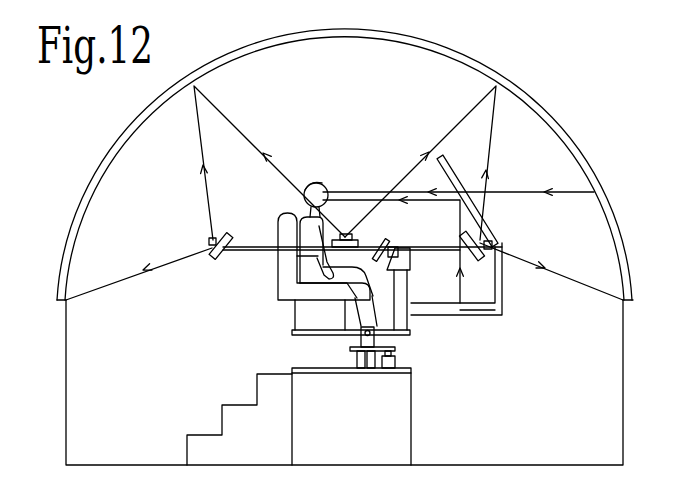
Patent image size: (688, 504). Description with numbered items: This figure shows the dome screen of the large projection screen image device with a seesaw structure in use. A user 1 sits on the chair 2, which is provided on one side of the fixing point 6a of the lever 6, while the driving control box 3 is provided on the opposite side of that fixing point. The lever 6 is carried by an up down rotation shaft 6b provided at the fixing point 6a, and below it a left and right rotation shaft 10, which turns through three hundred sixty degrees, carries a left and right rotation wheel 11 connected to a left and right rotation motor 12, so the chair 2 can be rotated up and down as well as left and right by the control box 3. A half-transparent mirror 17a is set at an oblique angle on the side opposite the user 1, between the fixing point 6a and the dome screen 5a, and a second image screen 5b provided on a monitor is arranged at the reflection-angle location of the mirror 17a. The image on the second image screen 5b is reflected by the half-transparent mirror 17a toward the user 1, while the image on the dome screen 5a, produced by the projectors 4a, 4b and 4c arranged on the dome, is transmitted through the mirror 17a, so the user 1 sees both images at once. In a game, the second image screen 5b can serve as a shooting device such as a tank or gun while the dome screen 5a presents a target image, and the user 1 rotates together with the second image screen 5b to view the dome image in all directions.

The user 1 is at (311, 186).
The chair 2 is at (280, 284).
The driving control box 3 is at (398, 287).
The projector 4a is at (212, 240).
The projector 4b is at (345, 236).
The projector 4c is at (484, 240).
The dome screen 5a is at (578, 150).
The second image screen 5b is at (484, 308).
The lever 6 is at (409, 331).
The fixing point of the lever 6a is at (364, 334).
The up down rotation shaft 6b is at (325, 346).
The left and right rotation shaft 10 is at (368, 369).
The left and right rotation wheel 11 is at (368, 367).
The left and right rotation motor 12 is at (395, 362).
The half-transparent mirror 17a is at (445, 167).